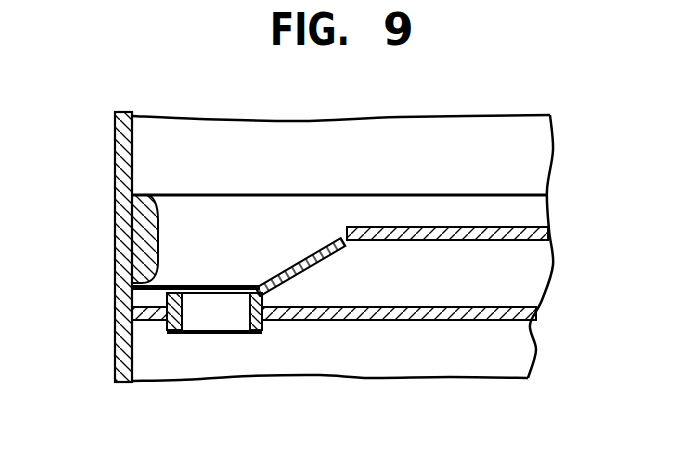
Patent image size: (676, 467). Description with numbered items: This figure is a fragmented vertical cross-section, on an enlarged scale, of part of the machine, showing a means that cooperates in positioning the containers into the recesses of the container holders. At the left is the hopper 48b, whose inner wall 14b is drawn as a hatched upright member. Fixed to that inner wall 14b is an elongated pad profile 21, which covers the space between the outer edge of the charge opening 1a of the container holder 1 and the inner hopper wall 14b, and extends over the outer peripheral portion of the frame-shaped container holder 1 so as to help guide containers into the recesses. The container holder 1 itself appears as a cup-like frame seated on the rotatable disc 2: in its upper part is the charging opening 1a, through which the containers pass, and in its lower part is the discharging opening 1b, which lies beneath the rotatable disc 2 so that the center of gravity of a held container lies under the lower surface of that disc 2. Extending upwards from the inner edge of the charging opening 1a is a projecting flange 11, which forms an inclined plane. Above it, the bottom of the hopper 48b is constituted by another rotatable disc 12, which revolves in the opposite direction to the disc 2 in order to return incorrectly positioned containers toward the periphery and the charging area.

The inner wall 14b is at (134, 140).
The hopper 48b is at (122, 241).
The elongated pad profile 21 is at (168, 213).
The rotatable disc 12 is at (457, 226).
The projecting flange 11 is at (310, 257).
The charging opening 1a is at (208, 292).
The container holder 1 is at (214, 335).
The discharging opening 1b is at (217, 336).
The rotatable disc 2 is at (356, 322).